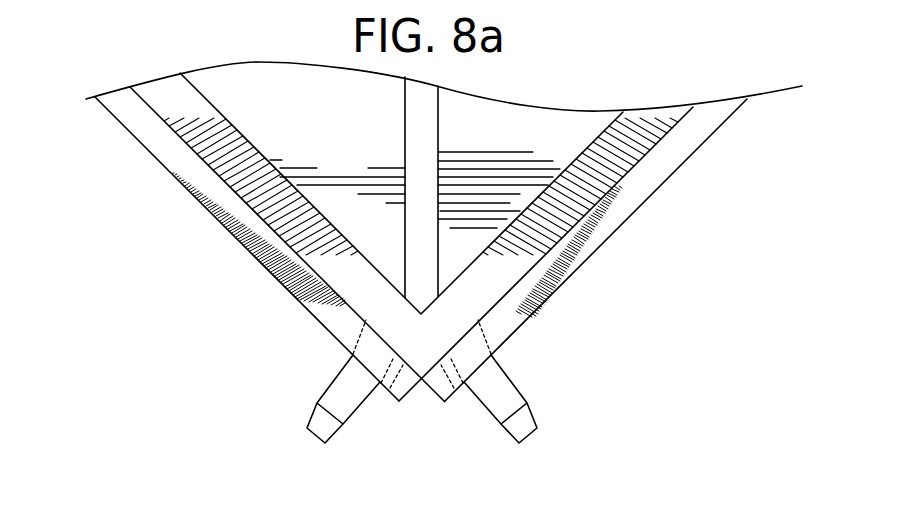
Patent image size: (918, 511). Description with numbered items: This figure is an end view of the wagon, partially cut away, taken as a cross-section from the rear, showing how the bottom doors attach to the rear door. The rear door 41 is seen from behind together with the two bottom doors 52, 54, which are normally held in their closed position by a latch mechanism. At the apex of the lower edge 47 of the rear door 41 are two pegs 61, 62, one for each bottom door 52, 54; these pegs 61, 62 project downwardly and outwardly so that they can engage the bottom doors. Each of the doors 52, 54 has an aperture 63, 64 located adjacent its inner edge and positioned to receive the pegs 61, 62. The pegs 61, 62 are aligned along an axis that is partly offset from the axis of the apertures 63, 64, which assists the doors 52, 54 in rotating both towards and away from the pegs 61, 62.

The rear door 41 is at (297, 72).
The lower edge 47 is at (331, 263).
The bottom door 52 is at (597, 228).
The bottom door 54 is at (232, 230).
The peg 61 is at (323, 420).
The peg 62 is at (521, 420).
The aperture 63 is at (358, 336).
The aperture 64 is at (487, 336).